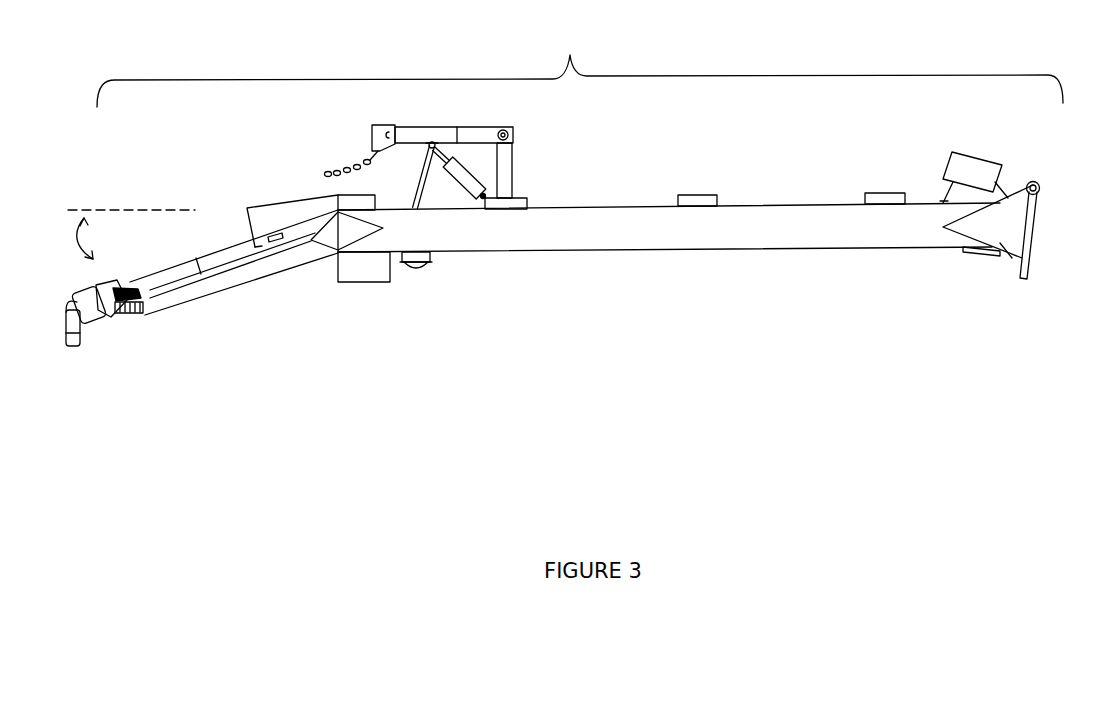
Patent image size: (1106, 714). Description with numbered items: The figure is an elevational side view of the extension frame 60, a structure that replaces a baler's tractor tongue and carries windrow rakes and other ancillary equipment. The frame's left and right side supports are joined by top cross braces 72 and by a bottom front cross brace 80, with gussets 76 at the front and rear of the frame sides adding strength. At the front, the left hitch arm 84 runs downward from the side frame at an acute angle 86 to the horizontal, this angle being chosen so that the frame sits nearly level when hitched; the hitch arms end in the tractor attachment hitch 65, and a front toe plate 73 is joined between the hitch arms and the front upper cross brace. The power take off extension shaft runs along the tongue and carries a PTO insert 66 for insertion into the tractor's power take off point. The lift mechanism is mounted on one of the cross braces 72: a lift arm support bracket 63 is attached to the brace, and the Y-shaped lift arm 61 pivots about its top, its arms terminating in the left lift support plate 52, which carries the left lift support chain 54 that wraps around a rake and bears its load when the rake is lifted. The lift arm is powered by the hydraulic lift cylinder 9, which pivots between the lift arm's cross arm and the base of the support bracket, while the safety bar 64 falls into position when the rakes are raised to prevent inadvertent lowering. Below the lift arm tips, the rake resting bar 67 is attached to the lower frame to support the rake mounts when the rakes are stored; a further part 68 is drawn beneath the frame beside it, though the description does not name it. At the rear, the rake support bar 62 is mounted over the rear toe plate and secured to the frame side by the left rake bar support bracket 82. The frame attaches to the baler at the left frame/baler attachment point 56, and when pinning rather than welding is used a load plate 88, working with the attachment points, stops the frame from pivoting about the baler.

The extension frame 60 is at (580, 66).
The left lift support chain 54 is at (441, 147).
The lift arm 61 is at (480, 127).
The left lift support plate 52 is at (372, 131).
The top cross braces 72 is at (348, 194).
The safety bar 64 is at (419, 184).
The hydraulic lift cylinder 9 is at (466, 193).
The lift arm support bracket 63 is at (512, 165).
The front toe plate 73 is at (277, 215).
The acute angle 86 is at (94, 238).
The gussets 76 is at (333, 251).
The left hitch arm 84 is at (233, 284).
The bottom front cross brace 80 is at (368, 283).
The bracket 68 is at (416, 271).
The rake resting bar 67 is at (432, 265).
The tractor attachment hitch 65 is at (130, 318).
The PTO insert 66 is at (71, 352).
The left rake bar support bracket 82 is at (942, 202).
The rake support bar 62 is at (975, 163).
The left frame/baler attachment point 56 is at (1041, 189).
The load plate 88 is at (1030, 223).